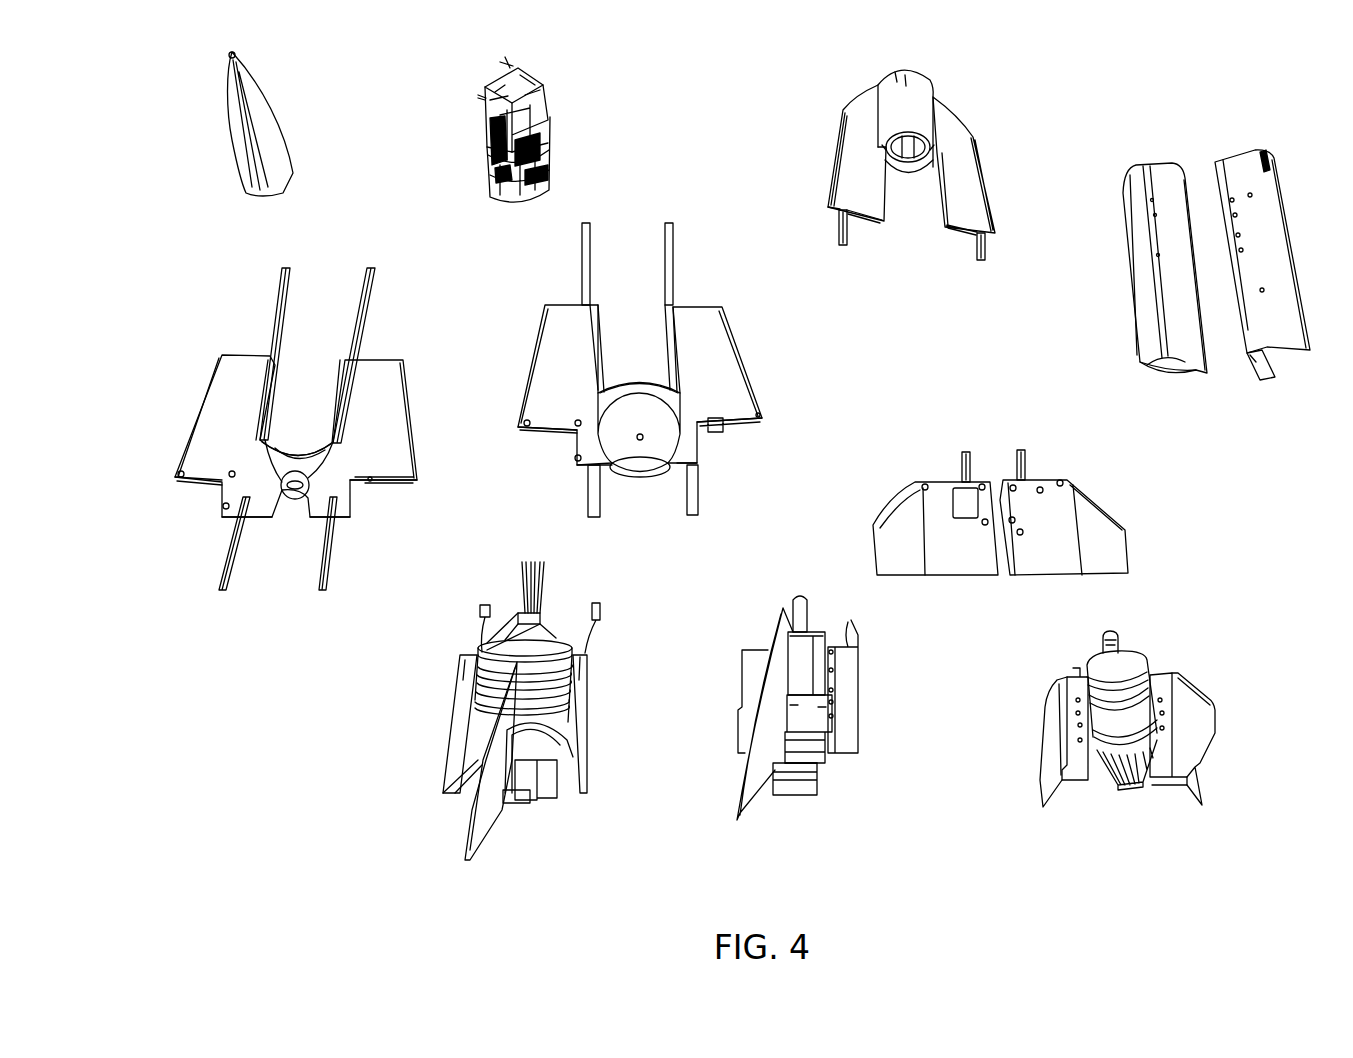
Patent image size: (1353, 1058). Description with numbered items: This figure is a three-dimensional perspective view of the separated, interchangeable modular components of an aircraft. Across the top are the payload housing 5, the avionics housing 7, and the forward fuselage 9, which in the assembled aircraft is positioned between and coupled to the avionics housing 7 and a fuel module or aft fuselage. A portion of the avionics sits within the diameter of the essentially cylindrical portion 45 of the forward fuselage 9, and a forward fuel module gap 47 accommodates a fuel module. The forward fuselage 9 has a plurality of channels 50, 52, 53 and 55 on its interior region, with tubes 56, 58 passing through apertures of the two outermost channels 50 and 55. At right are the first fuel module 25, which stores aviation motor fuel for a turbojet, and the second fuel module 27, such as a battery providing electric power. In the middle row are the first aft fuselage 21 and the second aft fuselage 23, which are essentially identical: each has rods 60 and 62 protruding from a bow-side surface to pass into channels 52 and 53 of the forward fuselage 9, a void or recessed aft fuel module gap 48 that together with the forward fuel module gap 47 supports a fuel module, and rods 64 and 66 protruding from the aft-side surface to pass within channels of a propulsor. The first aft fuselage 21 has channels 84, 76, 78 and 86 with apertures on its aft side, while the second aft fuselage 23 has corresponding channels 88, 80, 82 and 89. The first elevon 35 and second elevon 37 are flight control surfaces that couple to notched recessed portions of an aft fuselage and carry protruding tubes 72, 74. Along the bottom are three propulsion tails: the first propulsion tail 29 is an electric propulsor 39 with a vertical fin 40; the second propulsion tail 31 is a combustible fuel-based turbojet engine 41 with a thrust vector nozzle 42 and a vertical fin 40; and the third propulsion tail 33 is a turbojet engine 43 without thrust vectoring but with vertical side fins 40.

The payload housing 5 is at (240, 128).
The avionics housing 7 is at (483, 100).
The forward fuselage 9 is at (928, 182).
The first aft fuselage 21 is at (286, 462).
The second aft fuselage 23 is at (632, 408).
The first fuel module 25 is at (1172, 180).
The second fuel module 27 is at (1275, 185).
The first propulsion tail 29 is at (472, 717).
The second propulsion tail 31 is at (770, 732).
The third propulsion tail 33 is at (1177, 748).
The first elevon 35 is at (938, 489).
The second elevon 37 is at (1067, 494).
The electric propulsor 39 is at (512, 812).
The vertical fin 40 is at (462, 815).
The combustible fuel-based turbojet engine 41 is at (791, 797).
The thrust vector nozzle 42 is at (818, 795).
The combustible fuel-based turbojet engine 43 is at (1123, 790).
The essentially cylindrical portion 45 is at (900, 93).
The forward fuel module gap 47 is at (908, 165).
The aft fuel module gap 48 is at (305, 390).
The channel 50 is at (858, 222).
The channel 52 is at (858, 220).
The channel 53 is at (948, 232).
The channel 55 is at (957, 240).
The tube 56 is at (842, 247).
The tube 58 is at (988, 250).
The rod 60 is at (278, 278).
The rod 62 is at (372, 300).
The rod 64 is at (225, 580).
The rod 66 is at (323, 555).
The tube 72 is at (966, 455).
The tube 74 is at (1022, 455).
The channel 76 is at (228, 525).
The channel 78 is at (345, 522).
The channel 80 is at (585, 480).
The channel 82 is at (698, 475).
The channel 84 is at (215, 497).
The channel 86 is at (370, 490).
The channel 88 is at (565, 470).
The channel 89 is at (710, 435).